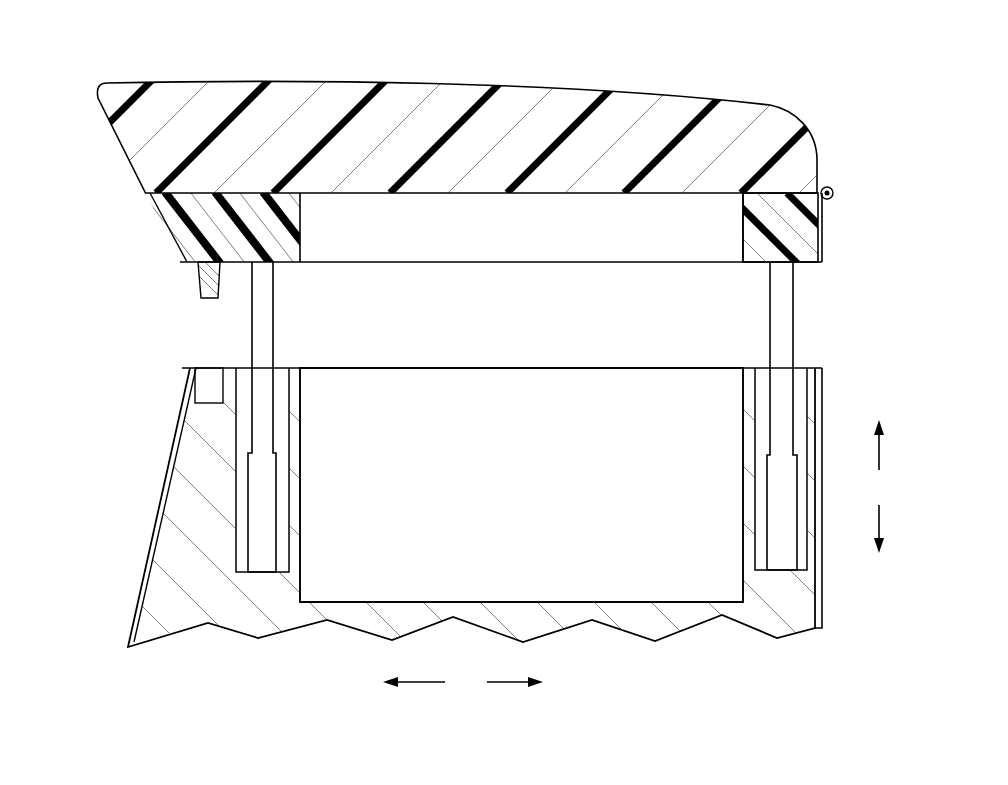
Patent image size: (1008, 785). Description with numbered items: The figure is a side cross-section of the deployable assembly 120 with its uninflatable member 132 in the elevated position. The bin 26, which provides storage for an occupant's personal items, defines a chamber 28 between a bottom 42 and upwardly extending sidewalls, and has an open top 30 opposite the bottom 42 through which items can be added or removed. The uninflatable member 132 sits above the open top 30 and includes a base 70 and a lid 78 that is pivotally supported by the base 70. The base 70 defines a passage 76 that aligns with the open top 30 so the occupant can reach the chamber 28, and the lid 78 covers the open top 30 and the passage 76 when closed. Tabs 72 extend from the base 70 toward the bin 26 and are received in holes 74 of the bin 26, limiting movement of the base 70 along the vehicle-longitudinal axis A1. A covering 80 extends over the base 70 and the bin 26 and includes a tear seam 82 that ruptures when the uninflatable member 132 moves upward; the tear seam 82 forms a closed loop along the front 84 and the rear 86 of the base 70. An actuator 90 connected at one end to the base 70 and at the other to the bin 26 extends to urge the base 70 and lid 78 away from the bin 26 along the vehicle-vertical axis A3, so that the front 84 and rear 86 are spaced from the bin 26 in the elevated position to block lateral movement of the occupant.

The deployable assembly 120 is at (60, 123).
The uninflatable member 132 is at (883, 77).
The lid 78 is at (773, 133).
The base 70 is at (793, 233).
The rear 86 is at (823, 247).
The front 84 is at (168, 230).
The passage 76 is at (517, 241).
The tear seam 82 is at (185, 262).
The tabs 72 is at (208, 280).
The bin 26 is at (180, 542).
The holes 74 is at (193, 397).
The covering 80 is at (822, 580).
The open top 30 is at (519, 420).
The chamber 28 is at (519, 507).
The bottom 42 is at (455, 601).
The actuator 90 is at (268, 483).
The vehicle-longitudinal axis A1 is at (463, 684).
The vehicle-vertical axis A3 is at (879, 486).